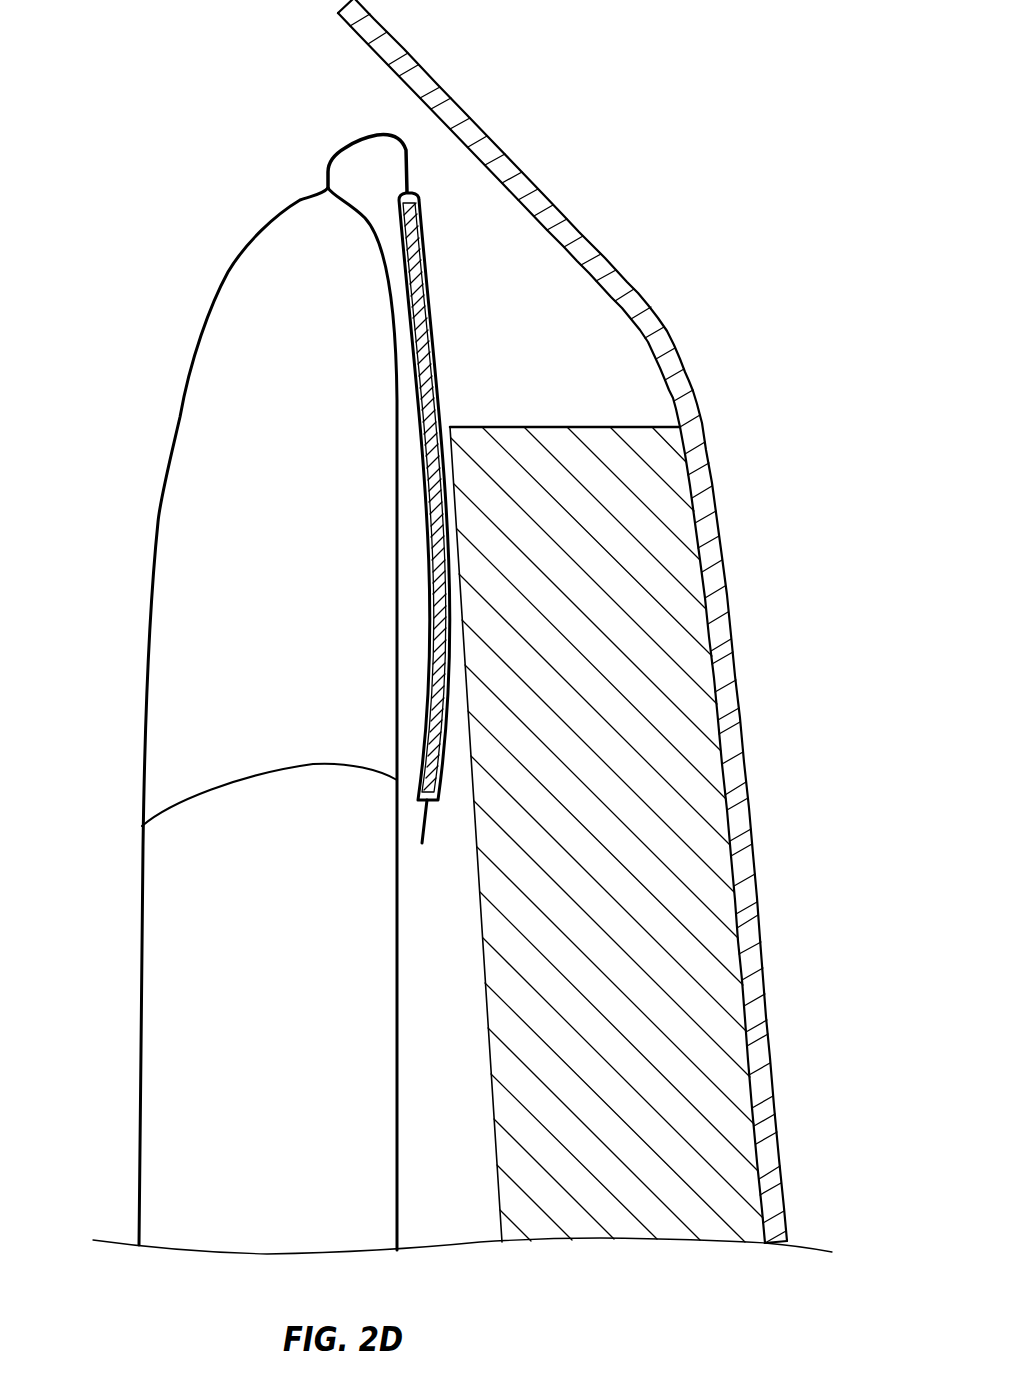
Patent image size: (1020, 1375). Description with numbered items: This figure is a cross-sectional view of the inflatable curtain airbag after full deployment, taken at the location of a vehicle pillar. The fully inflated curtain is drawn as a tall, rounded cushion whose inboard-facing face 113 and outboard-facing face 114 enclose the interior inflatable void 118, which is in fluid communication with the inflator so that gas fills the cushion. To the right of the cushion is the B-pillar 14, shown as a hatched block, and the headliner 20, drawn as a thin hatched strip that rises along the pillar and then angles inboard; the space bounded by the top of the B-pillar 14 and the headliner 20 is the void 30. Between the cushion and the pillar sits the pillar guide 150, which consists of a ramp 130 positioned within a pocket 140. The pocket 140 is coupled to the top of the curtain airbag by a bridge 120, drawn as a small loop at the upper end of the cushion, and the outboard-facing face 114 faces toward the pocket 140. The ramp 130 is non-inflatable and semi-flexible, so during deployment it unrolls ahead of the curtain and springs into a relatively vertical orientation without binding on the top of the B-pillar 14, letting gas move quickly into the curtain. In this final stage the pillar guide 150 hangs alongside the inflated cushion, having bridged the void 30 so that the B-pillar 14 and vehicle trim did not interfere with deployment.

The B-pillar 14 is at (552, 425).
The headliner 20 is at (620, 259).
The void 30 is at (578, 328).
The inboard-facing face 113 is at (157, 522).
The outboard-facing face 114 is at (142, 826).
The interior inflatable void 118 is at (302, 494).
The bridge 120 is at (349, 143).
The ramp 130 is at (423, 227).
The pocket 140 is at (427, 277).
The pillar guide 150 is at (646, 103).